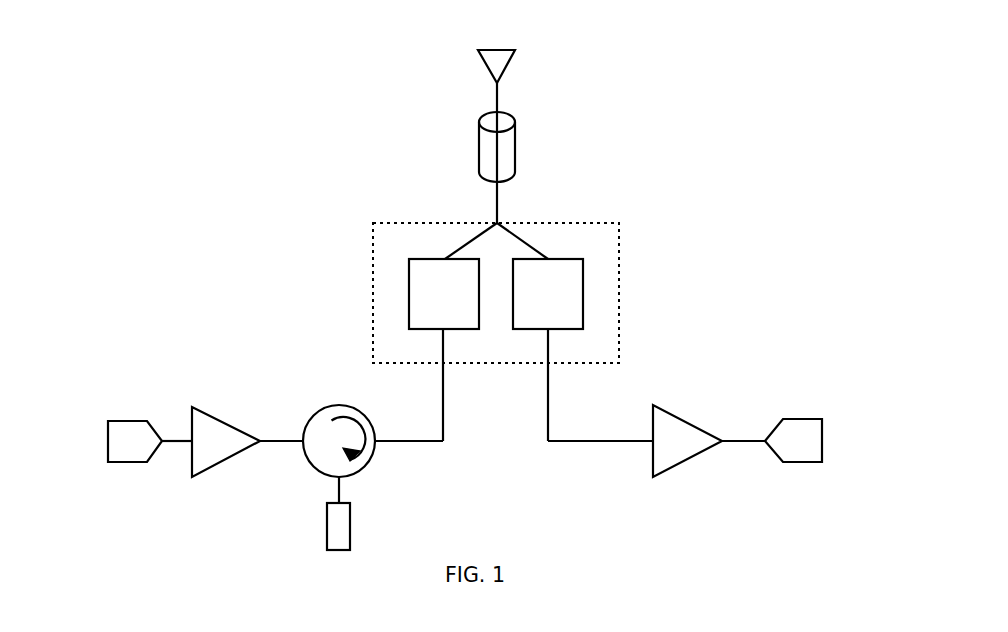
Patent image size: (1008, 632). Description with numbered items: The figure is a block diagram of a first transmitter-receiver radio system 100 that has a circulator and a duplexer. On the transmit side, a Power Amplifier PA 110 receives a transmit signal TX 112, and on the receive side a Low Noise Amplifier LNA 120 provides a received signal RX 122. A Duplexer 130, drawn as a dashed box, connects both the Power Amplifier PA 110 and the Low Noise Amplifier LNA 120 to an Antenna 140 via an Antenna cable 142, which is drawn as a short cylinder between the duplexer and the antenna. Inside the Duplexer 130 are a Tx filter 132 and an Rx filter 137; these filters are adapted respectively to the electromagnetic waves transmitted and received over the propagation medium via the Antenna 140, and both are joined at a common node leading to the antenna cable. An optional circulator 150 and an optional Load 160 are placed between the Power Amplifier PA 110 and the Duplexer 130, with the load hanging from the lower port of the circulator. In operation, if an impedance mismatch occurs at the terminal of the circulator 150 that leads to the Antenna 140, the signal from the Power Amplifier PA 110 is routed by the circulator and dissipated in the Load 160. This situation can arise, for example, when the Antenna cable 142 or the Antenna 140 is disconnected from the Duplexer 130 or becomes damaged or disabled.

The first transmitter-receiver radio system 100 is at (793, 62).
The Power Amplifier PA 110 is at (207, 407).
The transmit signal TX 112 is at (130, 462).
The Low Noise Amplifier LNA 120 is at (697, 422).
The received signal RX 122 is at (810, 419).
The Duplexer 130 is at (375, 250).
The Tx filter 132 is at (432, 259).
The Rx filter 137 is at (560, 259).
The Antenna 140 is at (497, 50).
The Antenna cable 142 is at (513, 150).
The circulator 150 is at (330, 408).
The Load 160 is at (350, 515).